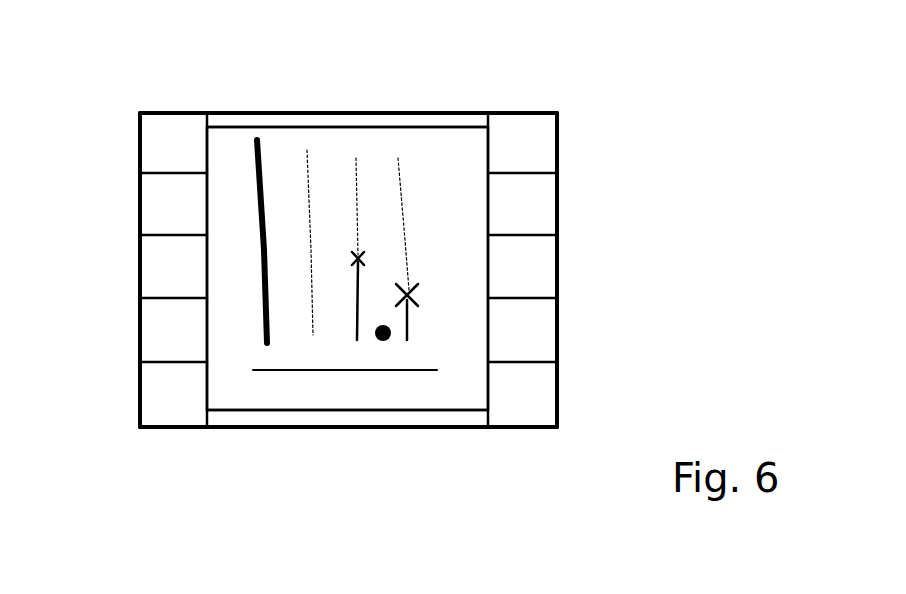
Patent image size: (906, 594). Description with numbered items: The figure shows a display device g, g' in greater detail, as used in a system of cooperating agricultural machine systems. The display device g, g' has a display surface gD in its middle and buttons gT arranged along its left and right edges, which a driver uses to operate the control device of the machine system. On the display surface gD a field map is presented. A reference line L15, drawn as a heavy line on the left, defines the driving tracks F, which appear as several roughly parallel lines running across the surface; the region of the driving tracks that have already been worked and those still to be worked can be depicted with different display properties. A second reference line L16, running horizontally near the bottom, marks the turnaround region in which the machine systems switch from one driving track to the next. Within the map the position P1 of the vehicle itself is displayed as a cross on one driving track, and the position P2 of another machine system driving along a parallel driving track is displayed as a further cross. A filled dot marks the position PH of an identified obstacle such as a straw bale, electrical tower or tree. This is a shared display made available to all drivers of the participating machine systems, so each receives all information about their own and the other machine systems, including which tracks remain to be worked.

The display device g is at (424, 255).
The display device g' is at (348, 270).
The display surface gD is at (227, 147).
The buttons gT is at (612, 167).
The driving tracks F is at (307, 150).
The reference line L15 is at (263, 313).
The reference line L16 is at (423, 372).
The position of the vehicle P1 is at (416, 292).
The position of another machine system P2 is at (356, 262).
The position of identified obstacle PH is at (378, 342).